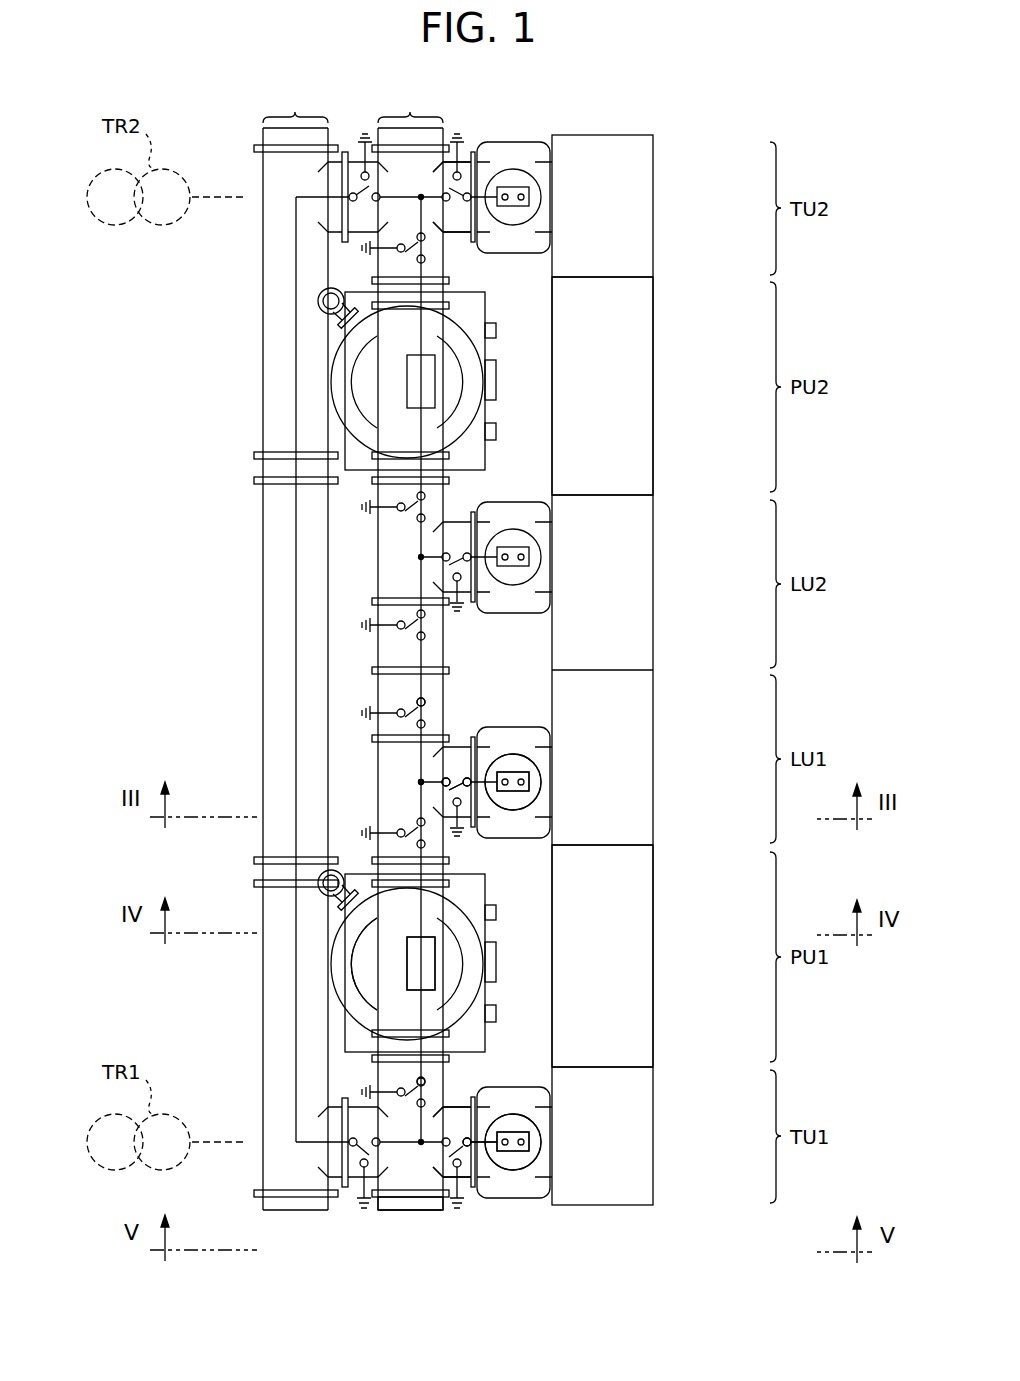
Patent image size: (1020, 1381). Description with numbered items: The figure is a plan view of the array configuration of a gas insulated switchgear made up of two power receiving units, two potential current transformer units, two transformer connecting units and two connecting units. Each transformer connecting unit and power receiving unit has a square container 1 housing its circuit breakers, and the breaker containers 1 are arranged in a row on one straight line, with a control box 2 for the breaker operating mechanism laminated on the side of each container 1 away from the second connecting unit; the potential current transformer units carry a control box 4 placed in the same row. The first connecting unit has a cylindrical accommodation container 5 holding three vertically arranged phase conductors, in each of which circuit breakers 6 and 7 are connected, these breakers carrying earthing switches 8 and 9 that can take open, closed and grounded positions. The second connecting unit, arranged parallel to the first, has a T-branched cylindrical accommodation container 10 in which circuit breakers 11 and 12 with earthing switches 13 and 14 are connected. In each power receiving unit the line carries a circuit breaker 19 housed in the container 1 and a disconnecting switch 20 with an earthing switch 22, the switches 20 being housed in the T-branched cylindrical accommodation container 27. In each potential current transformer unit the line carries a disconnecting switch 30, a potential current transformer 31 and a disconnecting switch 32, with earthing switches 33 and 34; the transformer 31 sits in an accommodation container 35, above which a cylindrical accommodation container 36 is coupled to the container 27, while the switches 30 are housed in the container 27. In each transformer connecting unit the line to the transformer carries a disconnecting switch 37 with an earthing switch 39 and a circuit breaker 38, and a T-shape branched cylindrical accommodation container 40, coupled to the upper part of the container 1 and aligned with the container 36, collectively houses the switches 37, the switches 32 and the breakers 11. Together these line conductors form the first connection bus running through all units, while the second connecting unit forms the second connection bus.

The container 1 is at (513, 142).
The control box 2 is at (653, 200).
The control box 4 is at (653, 355).
The cylindrical accommodation container 5 is at (377, 692).
The circuit breaker 6 is at (433, 710).
The circuit breaker 7 is at (420, 628).
The earthing switch 8 is at (345, 715).
The earthing switch 9 is at (363, 620).
The cylindrical accommodation container 10 is at (262, 560).
The circuit breaker 11 is at (355, 1160).
The circuit breaker 12 is at (360, 183).
The earthing switch 13 is at (369, 1216).
The earthing switch 14 is at (358, 128).
The circuit breaker 19 is at (529, 782).
The disconnecting switch 20 is at (456, 771).
The earthing switch 22 is at (465, 845).
The T-branched cylindrical accommodation container 27 is at (378, 780).
The disconnecting switch 30 is at (403, 783).
The potential current transformer 31 is at (418, 937).
The disconnecting switch 32 is at (428, 1090).
The earthing switch 33 is at (368, 830).
The earthing switch 34 is at (355, 1085).
The accommodation container 35 is at (340, 1000).
The cylindrical accommodation container 36 is at (377, 967).
The disconnecting switch 37 is at (463, 1155).
The circuit breaker 38 is at (529, 1142).
The earthing switch 39 is at (460, 1216).
The T-shape branched cylindrical accommodation container 40 is at (411, 1213).